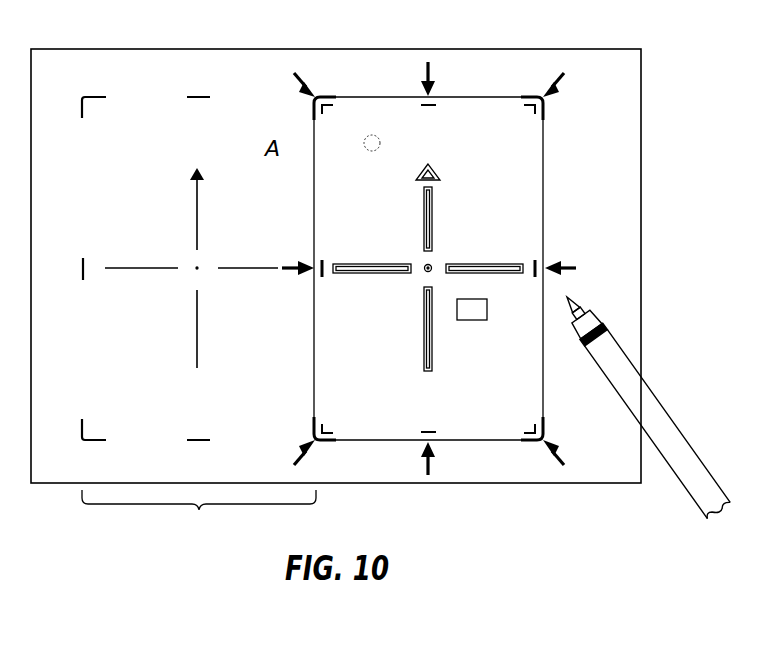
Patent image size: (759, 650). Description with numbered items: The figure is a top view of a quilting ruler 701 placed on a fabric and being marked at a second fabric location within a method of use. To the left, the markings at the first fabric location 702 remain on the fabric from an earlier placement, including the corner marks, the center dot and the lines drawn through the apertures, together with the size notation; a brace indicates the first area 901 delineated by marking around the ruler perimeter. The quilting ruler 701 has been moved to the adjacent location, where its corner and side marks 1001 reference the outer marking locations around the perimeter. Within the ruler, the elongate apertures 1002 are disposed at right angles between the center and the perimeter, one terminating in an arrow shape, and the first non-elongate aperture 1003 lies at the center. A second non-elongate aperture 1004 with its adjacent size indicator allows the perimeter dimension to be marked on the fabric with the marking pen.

The first fabric location A markings 702 is at (103, 68).
The first area 901 is at (199, 517).
The quilting ruler 701 is at (379, 114).
The corner and side marks 1001 is at (555, 78).
The elongate apertures 1002 is at (520, 265).
The first non-elongate aperture 1003 is at (432, 266).
The second non-elongate aperture 1004 is at (480, 320).